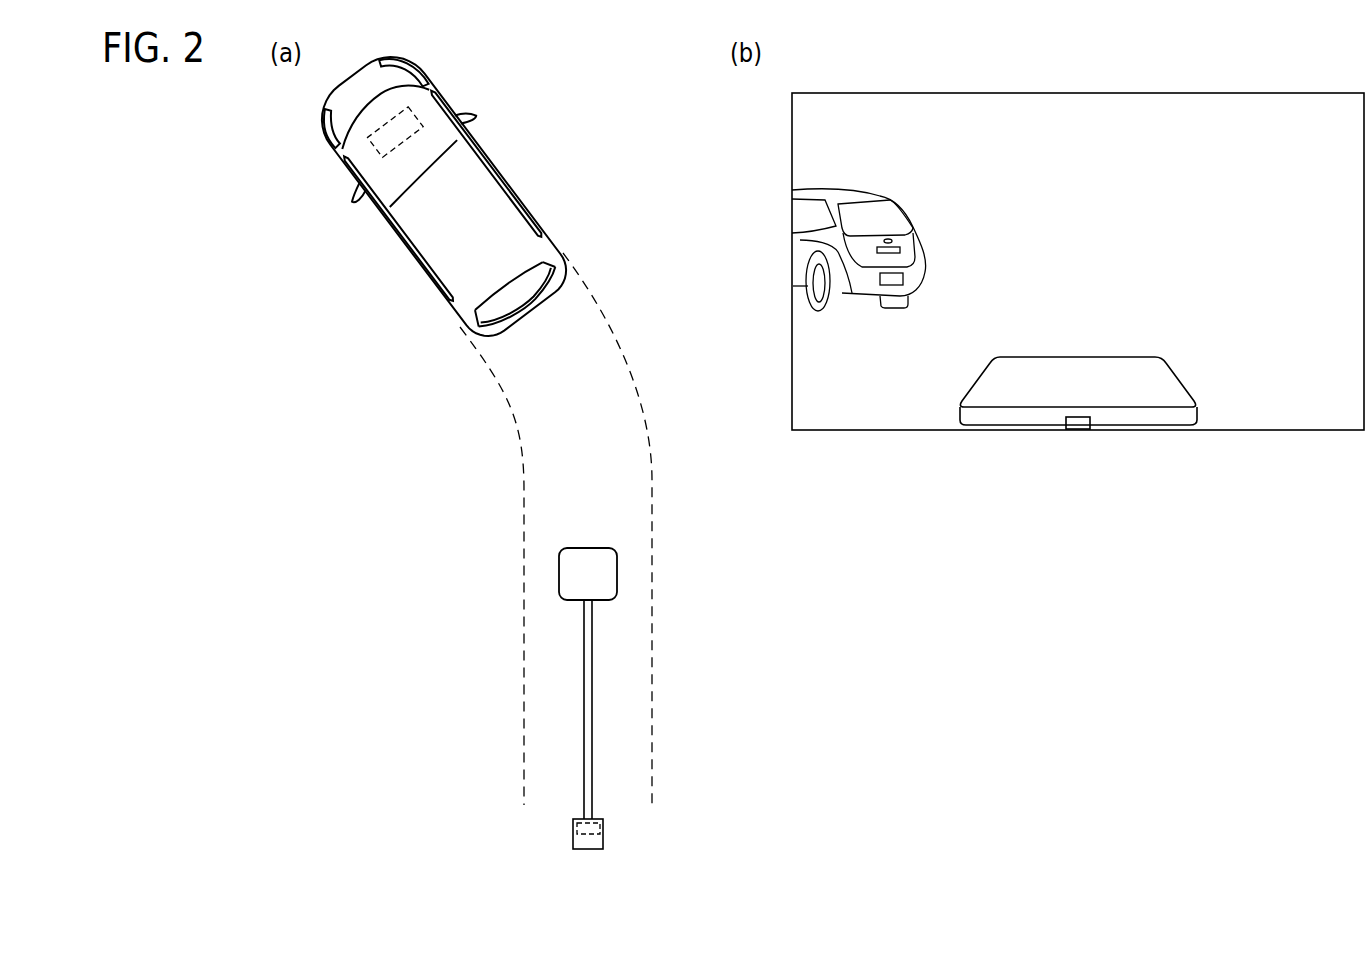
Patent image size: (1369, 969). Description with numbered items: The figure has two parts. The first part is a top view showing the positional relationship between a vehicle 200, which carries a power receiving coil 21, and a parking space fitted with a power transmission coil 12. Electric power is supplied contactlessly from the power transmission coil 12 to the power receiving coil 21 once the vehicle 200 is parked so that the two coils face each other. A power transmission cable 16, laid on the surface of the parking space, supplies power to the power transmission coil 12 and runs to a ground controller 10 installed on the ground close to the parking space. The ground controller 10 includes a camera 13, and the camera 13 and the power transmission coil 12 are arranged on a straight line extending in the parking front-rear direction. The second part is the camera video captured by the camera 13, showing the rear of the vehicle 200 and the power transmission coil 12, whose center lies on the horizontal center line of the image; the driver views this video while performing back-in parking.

The vehicle 200 is at (527, 197).
The power receiving coil 21 is at (400, 122).
The power transmission coil 12 is at (608, 582).
The power transmission cable 16 is at (588, 687).
The ground controller 10 is at (586, 848).
The camera 13 is at (600, 828).